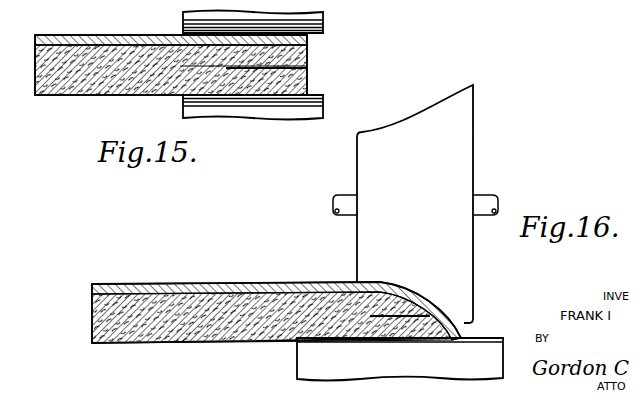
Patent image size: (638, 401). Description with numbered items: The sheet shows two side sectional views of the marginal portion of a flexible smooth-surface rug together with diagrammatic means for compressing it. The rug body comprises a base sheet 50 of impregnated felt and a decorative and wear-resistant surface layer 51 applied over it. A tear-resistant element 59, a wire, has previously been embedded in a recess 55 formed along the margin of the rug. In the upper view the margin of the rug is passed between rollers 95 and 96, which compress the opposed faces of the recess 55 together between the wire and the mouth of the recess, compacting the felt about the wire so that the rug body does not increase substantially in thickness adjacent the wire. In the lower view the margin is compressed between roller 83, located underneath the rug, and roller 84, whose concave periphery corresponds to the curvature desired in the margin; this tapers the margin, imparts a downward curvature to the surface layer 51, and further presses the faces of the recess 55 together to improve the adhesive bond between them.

In FIG. 15, the base sheet 50 is at (68, 94).
In FIG. 16, the base sheet 50 is at (133, 343).
In FIG. 15, the decorative and wear-resistant surface layer 51 is at (78, 43).
In FIG. 16, the decorative and wear-resistant surface layer 51 is at (139, 283).
In FIG. 15, the recess 55 is at (308, 57).
In FIG. 16, the recess 55 is at (431, 305).
In FIG. 15, the tear-resistant element 59 is at (195, 60).
In FIG. 16, the tear-resistant element 59 is at (353, 310).
In FIG. 16, the roller 83 is at (400, 359).
In FIG. 16, the roller 84 is at (462, 123).
In FIG. 15, the roller 95 is at (316, 106).
In FIG. 15, the roller 96 is at (324, 26).